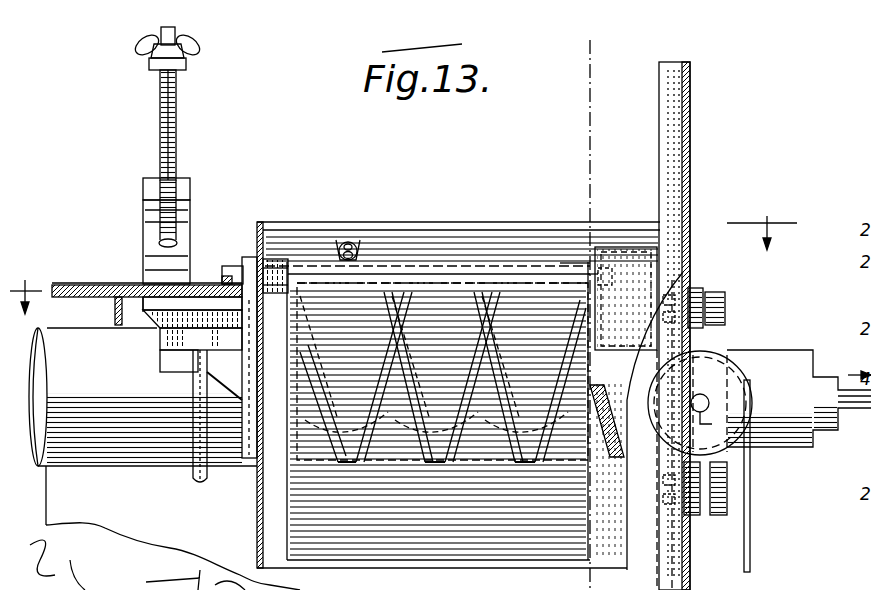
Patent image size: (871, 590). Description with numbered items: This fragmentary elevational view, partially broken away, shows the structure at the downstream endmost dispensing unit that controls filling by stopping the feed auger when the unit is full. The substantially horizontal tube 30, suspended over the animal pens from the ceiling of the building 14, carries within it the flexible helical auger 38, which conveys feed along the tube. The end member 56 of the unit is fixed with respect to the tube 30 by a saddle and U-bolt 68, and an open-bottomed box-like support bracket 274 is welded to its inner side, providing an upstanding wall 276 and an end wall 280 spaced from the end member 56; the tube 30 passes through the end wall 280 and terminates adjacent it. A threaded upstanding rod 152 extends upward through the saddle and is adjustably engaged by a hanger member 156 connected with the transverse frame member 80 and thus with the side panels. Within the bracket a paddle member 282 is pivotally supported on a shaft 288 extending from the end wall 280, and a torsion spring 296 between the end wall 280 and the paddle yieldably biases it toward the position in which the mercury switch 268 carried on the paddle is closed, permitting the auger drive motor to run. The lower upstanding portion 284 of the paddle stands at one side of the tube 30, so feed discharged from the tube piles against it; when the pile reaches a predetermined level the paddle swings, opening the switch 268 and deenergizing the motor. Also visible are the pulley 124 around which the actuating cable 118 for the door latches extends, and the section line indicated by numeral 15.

The building 14 is at (38, 278).
The section line 15- 15 is at (568, 42).
The tube 30 is at (75, 282).
The helical auger 38 is at (482, 368).
The end member 56 is at (690, 138).
The U-bolt 68 is at (193, 478).
The transverse frame member 80 is at (127, 287).
The actuating element 118 is at (752, 492).
The pulley 124 is at (730, 366).
The upstanding rod 152 is at (171, 126).
The hanger member 156 is at (196, 194).
The switch 268 is at (350, 242).
The support bracket 274 is at (516, 220).
The upstanding wall 276 is at (434, 228).
The end wall 280 is at (262, 243).
The paddle member 282 is at (252, 484).
The upstanding portion 284 is at (302, 524).
The shaft 288 is at (243, 262).
The torsion spring 296 is at (283, 270).